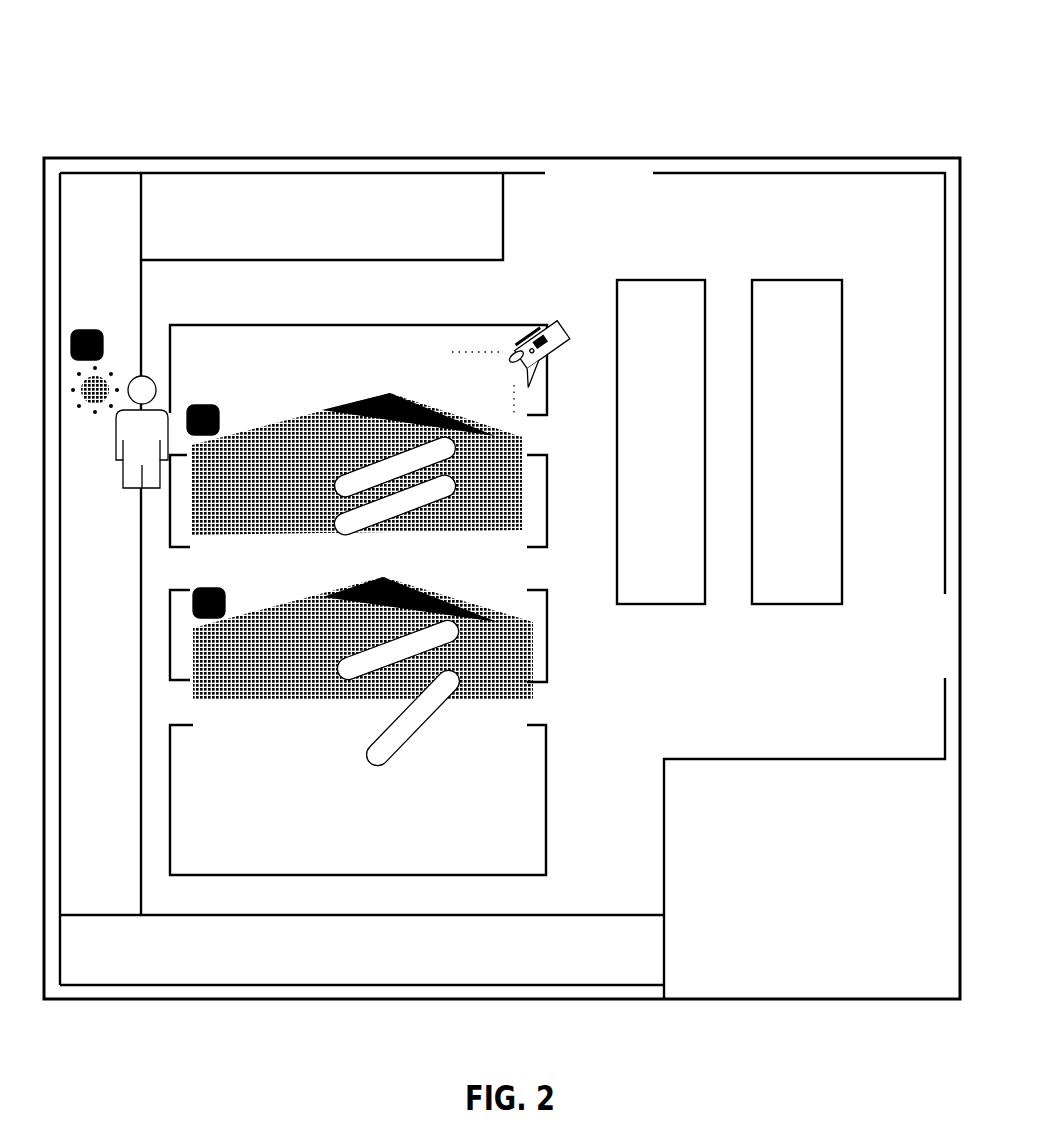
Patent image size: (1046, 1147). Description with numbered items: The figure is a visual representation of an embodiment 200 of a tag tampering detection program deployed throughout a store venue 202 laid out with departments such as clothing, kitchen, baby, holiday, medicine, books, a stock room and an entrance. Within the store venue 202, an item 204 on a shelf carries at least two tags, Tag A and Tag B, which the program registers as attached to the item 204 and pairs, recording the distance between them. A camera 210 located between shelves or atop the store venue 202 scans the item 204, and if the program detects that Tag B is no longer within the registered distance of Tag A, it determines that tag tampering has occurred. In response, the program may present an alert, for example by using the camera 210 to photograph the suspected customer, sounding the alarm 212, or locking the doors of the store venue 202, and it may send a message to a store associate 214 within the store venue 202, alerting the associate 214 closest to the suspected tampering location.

The embodiment 200 is at (119, 52).
The store venue 202 is at (504, 144).
The item 204 is at (294, 398).
The camera 210 is at (574, 344).
The alarm 212 is at (115, 358).
The store associate 214 is at (122, 492).